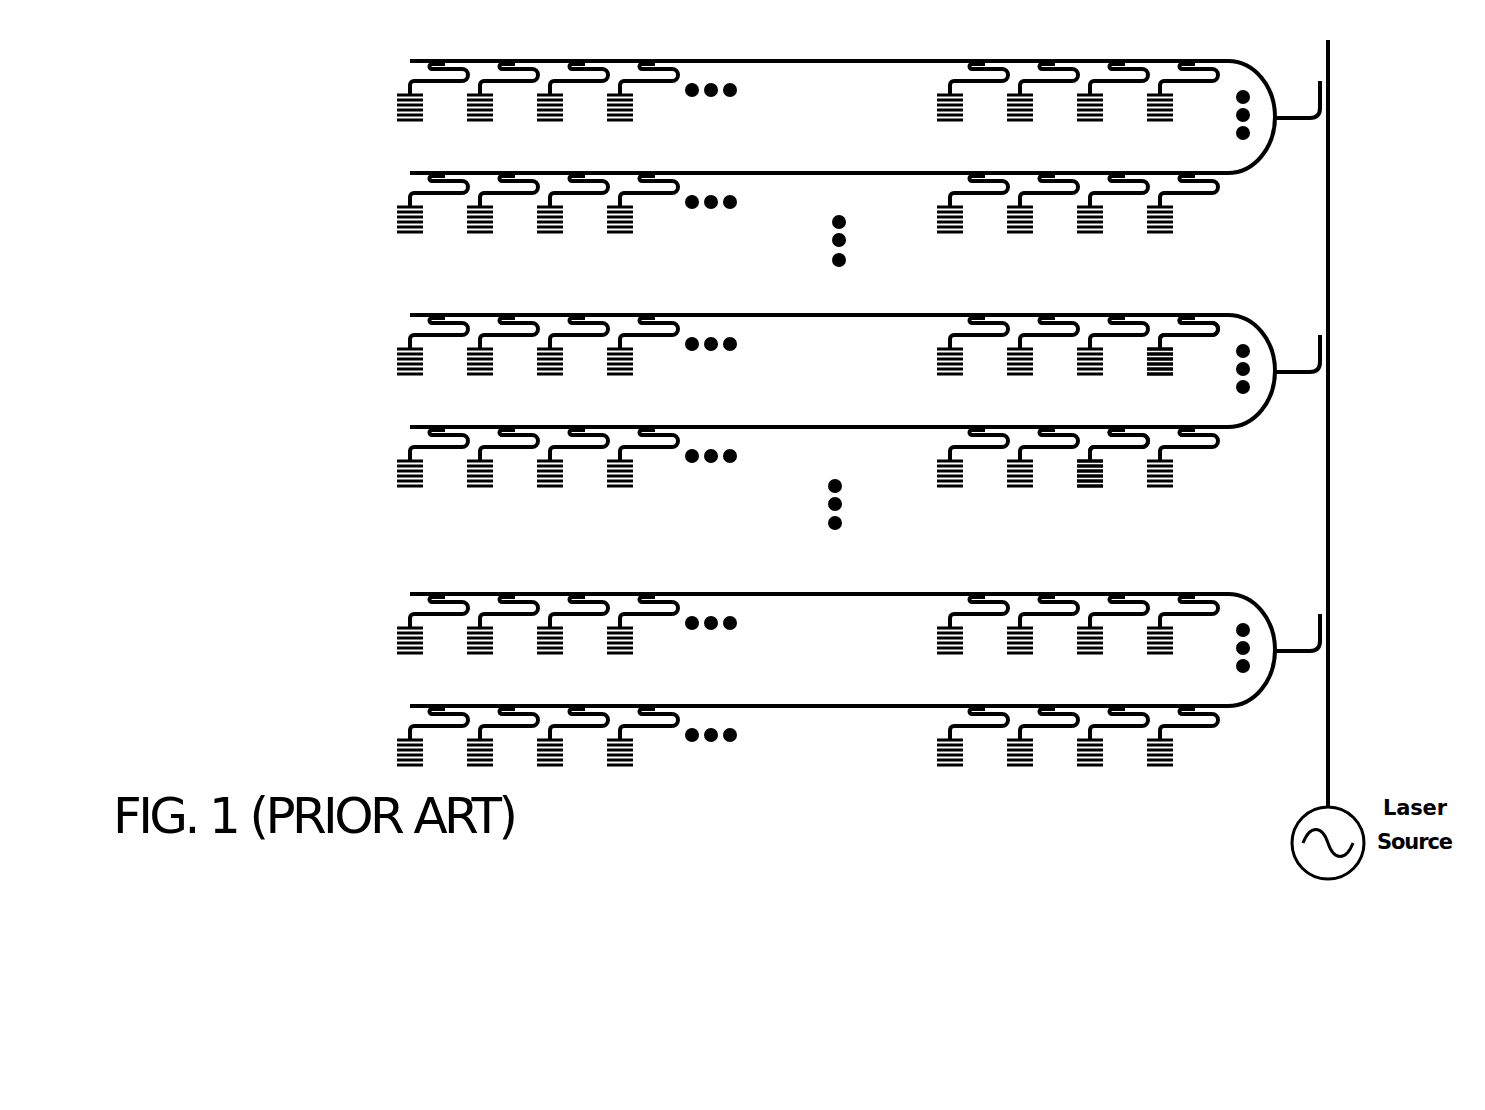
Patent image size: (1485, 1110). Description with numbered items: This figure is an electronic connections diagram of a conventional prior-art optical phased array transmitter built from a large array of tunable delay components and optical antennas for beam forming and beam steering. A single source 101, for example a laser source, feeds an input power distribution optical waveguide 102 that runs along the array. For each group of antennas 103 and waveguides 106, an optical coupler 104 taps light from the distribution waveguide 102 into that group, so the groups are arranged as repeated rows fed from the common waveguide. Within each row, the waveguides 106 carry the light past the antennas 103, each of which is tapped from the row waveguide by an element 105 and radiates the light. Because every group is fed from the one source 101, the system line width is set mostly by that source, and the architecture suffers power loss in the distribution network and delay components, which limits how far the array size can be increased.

The source 101 is at (1293, 833).
The input power distribution optical waveguide 102 is at (1325, 746).
The antennas 103 is at (1128, 434).
The optical coupler 104 is at (1303, 372).
The ring resonator coupler 105 is at (1199, 325).
The waveguides 106 is at (452, 170).